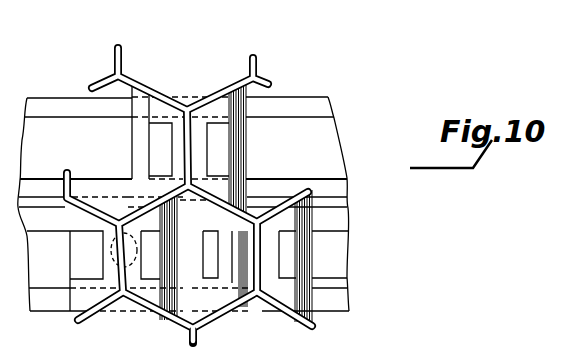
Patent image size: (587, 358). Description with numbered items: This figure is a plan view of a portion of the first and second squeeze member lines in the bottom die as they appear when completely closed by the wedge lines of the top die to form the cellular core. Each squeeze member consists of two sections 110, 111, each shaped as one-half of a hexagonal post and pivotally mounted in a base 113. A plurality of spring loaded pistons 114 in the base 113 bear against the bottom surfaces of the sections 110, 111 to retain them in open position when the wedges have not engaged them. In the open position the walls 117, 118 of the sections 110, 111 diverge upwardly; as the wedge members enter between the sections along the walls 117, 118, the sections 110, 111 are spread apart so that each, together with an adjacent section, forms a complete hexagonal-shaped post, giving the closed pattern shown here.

The section 110 is at (236, 297).
The section 111 is at (147, 302).
The base 113 is at (43, 302).
The spring loaded piston 114 is at (112, 302).
The wall 117 is at (176, 313).
The wall 118 is at (207, 315).